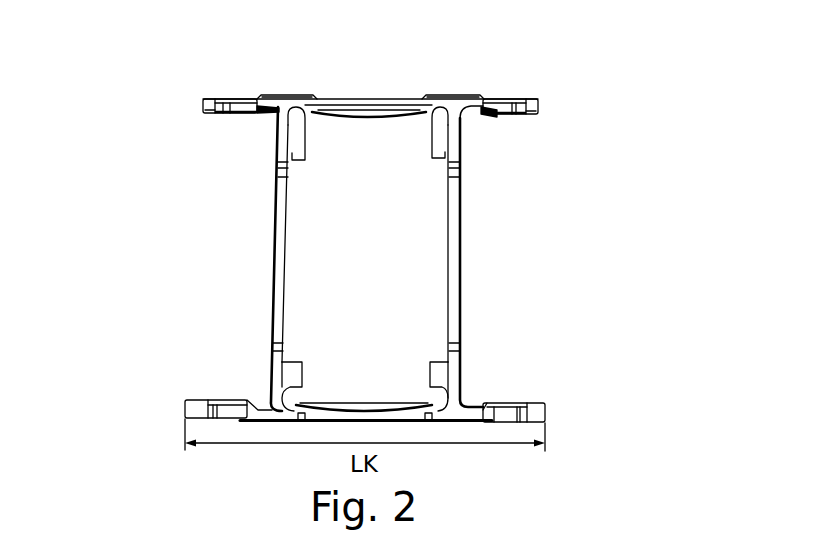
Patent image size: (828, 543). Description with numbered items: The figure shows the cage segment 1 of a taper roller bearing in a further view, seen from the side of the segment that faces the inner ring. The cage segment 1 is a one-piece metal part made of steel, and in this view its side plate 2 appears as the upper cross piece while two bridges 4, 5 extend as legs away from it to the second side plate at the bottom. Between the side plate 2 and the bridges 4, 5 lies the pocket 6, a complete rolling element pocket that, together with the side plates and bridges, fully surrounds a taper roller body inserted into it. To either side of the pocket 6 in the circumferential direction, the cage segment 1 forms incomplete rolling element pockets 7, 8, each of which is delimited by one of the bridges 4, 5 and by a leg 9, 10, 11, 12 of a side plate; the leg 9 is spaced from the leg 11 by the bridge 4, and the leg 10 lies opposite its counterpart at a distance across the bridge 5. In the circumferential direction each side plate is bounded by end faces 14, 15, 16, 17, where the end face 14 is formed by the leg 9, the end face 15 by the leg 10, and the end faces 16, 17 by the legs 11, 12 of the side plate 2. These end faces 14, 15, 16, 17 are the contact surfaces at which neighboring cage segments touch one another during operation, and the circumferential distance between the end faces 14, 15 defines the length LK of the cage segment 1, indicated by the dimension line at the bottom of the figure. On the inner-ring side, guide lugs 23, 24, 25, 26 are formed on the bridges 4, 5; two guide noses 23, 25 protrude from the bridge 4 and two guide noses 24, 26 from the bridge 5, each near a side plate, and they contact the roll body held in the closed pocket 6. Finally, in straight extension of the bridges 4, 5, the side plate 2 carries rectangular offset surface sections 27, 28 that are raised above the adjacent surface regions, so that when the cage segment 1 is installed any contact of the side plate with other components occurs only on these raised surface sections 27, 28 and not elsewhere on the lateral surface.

The cage segment 1 is at (582, 53).
The side plate 2 is at (340, 99).
The bridge 4 is at (277, 245).
The bridge 5 is at (460, 242).
The pocket 6 is at (372, 138).
The incomplete rolling element pocket 7 is at (262, 135).
The incomplete rolling element pocket 8 is at (488, 133).
The leg 9 is at (224, 398).
The leg 10 is at (505, 402).
The leg 11 is at (232, 117).
The leg 12 is at (506, 117).
The end face 14 is at (185, 410).
The end face 15 is at (548, 412).
The end face 16 is at (203, 104).
The end face 17 is at (546, 110).
The guide lug 23 is at (306, 148).
The guide lug 24 is at (434, 150).
The guide lug 25 is at (300, 365).
The guide lug 26 is at (433, 367).
The offset surface section 27 is at (290, 94).
The offset surface section 28 is at (450, 96).